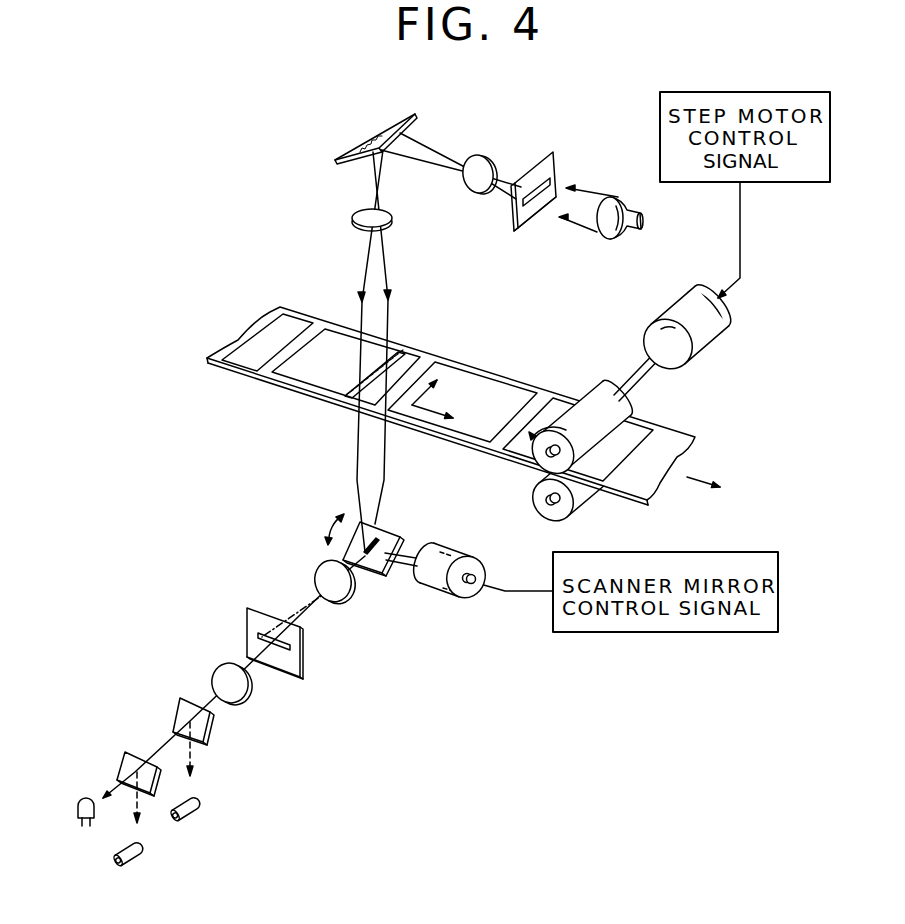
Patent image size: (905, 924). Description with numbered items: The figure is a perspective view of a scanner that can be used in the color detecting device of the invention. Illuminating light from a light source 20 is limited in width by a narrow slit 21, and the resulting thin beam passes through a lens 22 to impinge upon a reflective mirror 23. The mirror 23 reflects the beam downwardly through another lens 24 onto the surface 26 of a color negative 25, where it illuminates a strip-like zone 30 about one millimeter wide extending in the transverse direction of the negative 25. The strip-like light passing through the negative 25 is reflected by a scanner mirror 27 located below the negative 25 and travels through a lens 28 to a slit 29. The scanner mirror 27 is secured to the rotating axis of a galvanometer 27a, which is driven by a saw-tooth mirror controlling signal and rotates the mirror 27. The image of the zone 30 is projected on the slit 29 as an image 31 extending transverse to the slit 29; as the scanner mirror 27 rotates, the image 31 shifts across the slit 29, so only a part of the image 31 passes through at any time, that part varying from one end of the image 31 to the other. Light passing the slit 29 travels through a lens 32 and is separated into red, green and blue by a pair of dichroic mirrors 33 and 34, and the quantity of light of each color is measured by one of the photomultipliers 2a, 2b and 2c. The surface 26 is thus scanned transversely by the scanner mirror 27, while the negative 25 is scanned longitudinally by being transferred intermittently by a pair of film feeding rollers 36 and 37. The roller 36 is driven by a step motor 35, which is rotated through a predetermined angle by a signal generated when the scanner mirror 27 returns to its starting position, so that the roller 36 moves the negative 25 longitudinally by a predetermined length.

The light source 20 is at (613, 198).
The slit 21 is at (528, 206).
The lens 22 is at (482, 155).
The reflective mirror 23 is at (398, 117).
The lens 24 is at (392, 218).
The color negative 25 is at (460, 440).
The surface 26 is at (325, 382).
The scanner mirror 27 is at (383, 533).
The galvanometer 27a is at (457, 592).
The lens 28 is at (345, 594).
The slit 29 is at (295, 648).
The strip-like zone 30 is at (387, 347).
The image 31 is at (278, 638).
The lens 32 is at (237, 700).
The dichroic mirror 33 is at (187, 697).
The dichroic mirror 34 is at (132, 752).
The step motor 35 is at (705, 345).
The film feeding roller 36 is at (588, 390).
The film feeding roller 37 is at (553, 510).
The photomultiplier 2a is at (197, 808).
The photomultiplier 2b is at (140, 853).
The photomultiplier 2c is at (93, 813).